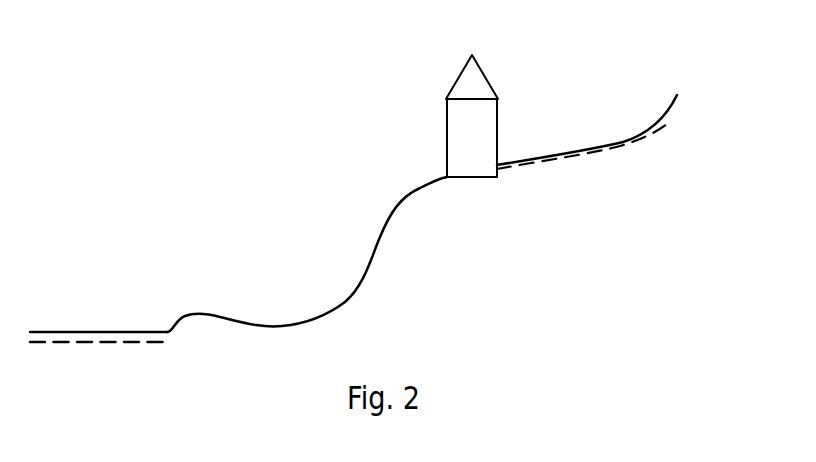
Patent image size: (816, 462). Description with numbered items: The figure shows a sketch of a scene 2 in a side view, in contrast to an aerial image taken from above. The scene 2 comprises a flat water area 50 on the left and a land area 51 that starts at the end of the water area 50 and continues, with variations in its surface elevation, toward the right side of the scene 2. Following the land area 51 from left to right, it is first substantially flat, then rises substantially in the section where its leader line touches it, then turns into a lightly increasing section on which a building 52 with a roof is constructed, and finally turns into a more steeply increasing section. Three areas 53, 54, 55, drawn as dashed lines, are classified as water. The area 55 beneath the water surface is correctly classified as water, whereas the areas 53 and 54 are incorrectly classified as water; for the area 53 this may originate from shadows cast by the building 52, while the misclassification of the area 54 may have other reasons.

The scene 2 is at (284, 35).
The flat water area 50 is at (135, 331).
The land area 51 is at (367, 278).
The building 52 is at (446, 137).
The area incorrectly classified as water 53 is at (528, 168).
The area incorrectly classified as water 54 is at (647, 137).
The area correctly classified as water 55 is at (108, 343).